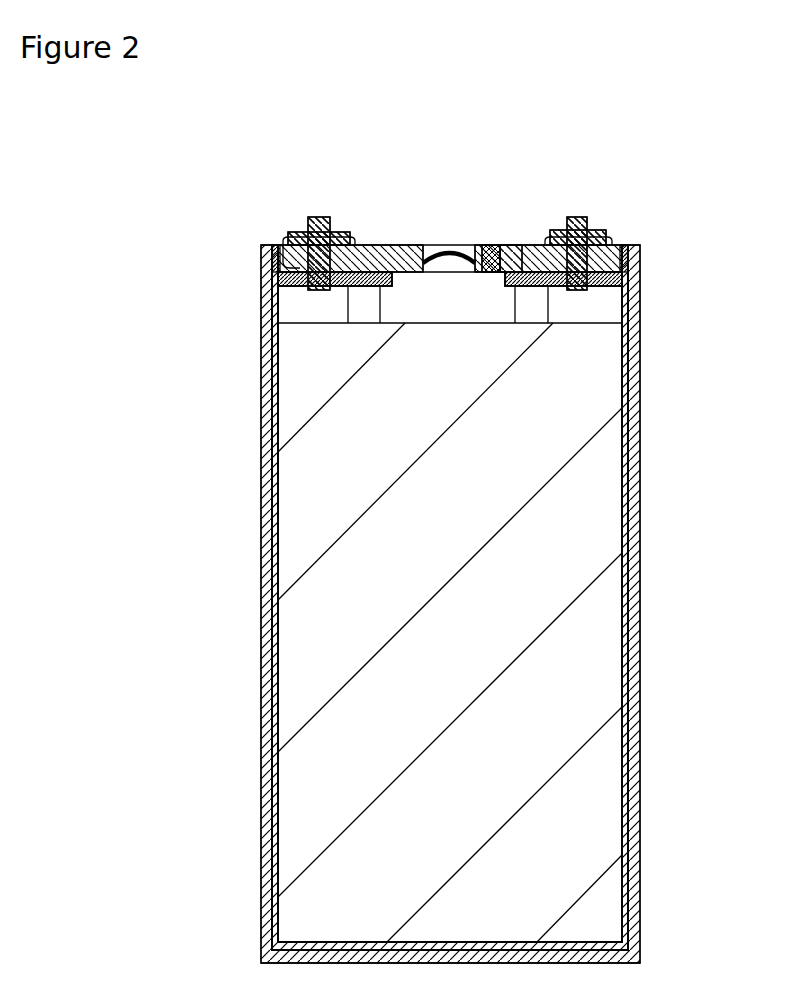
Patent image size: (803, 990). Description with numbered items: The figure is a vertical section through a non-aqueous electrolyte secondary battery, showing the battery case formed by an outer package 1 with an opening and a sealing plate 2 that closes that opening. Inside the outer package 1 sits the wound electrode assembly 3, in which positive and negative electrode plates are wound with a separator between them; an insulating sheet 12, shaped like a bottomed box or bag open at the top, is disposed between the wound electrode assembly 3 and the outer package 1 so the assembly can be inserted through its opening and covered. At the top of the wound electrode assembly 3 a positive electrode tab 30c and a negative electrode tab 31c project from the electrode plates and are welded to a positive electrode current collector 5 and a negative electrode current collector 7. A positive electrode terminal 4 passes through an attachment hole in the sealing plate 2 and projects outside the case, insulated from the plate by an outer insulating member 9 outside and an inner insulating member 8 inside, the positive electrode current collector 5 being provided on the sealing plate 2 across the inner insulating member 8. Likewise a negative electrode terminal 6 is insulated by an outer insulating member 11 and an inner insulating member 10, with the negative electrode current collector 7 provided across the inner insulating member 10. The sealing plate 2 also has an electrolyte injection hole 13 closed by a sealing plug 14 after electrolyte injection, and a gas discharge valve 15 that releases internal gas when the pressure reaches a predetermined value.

The outer package 1 is at (268, 796).
The sealing plate 2 is at (401, 245).
The wound electrode assembly 3 is at (318, 622).
The positive electrode terminal 4 is at (300, 232).
The positive electrode current collector 5 is at (280, 296).
The negative electrode terminal 6 is at (600, 230).
The negative electrode current collector 7 is at (618, 296).
The inner insulating member 8 is at (274, 266).
The outer insulating member 9 is at (290, 245).
The inner insulating member 10 is at (626, 264).
The outer insulating member 11 is at (606, 245).
The insulating sheet 12 is at (276, 902).
The electrolyte injection hole 13 is at (510, 250).
The sealing plug 14 is at (494, 245).
The gas discharge valve 15 is at (459, 245).
The positive electrode tab 30c is at (358, 312).
The negative electrode tab 31c is at (538, 312).